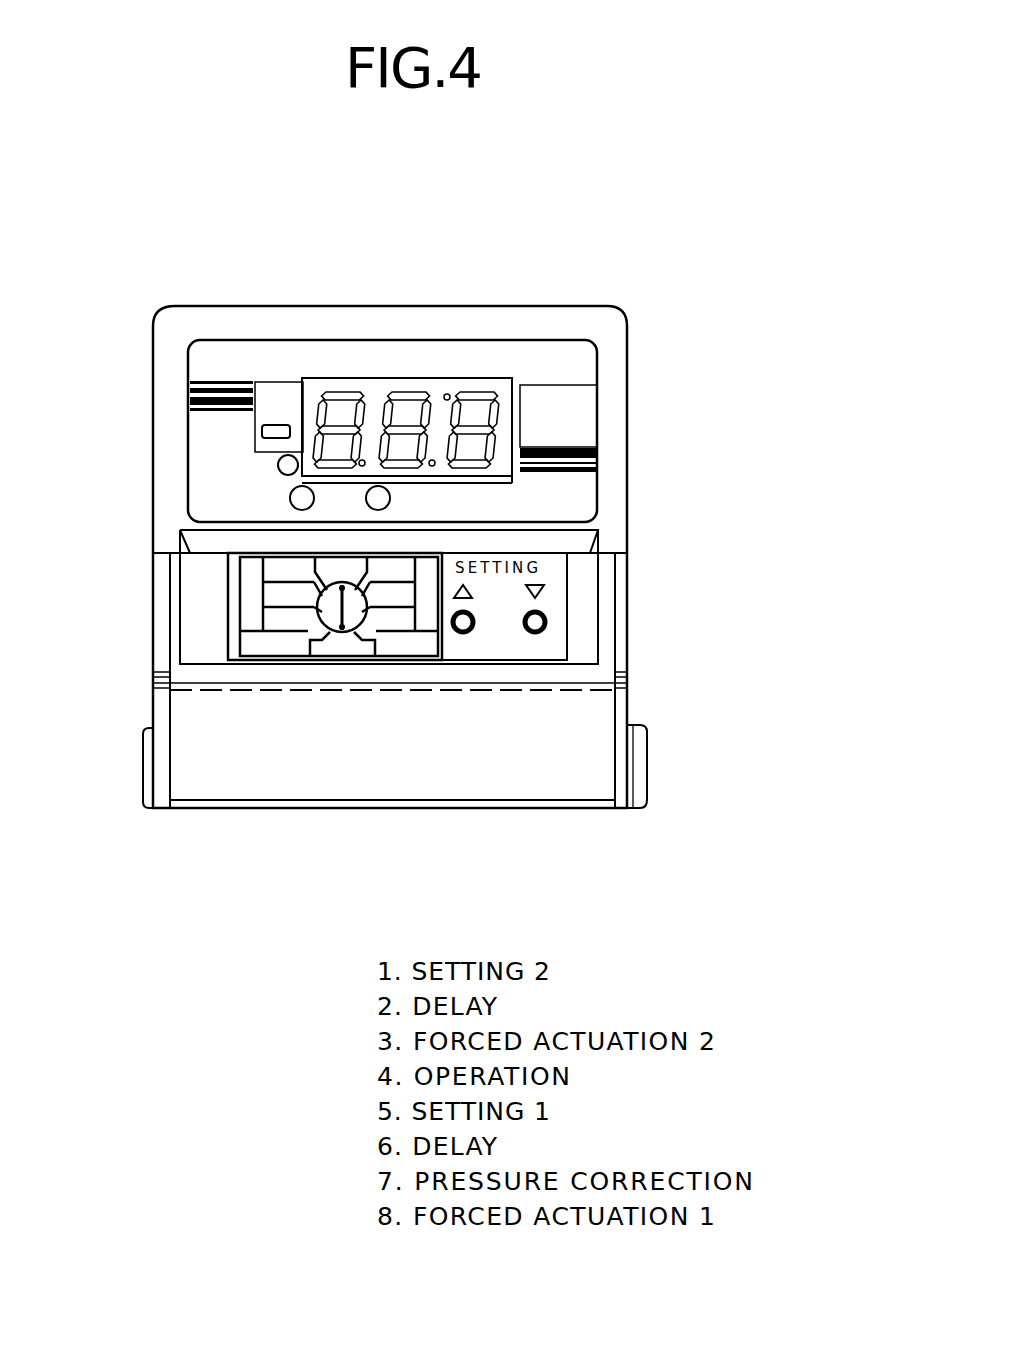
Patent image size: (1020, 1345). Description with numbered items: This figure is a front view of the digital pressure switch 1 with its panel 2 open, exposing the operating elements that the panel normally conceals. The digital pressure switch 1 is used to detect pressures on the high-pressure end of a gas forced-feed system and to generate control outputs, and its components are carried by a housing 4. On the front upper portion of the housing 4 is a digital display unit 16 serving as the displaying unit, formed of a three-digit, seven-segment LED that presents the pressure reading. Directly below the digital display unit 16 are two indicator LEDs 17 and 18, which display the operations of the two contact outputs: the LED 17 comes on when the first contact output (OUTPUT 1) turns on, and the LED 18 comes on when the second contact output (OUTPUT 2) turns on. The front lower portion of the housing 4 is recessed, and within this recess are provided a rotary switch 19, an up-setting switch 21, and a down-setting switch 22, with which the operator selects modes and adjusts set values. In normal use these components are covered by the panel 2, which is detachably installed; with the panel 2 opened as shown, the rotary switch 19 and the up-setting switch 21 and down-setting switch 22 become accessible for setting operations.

The digital pressure switch 1 is at (600, 290).
The panel 2 is at (590, 788).
The housing 4 is at (152, 397).
The digital display unit 16 is at (378, 397).
The LED 17 is at (290, 497).
The LED 18 is at (390, 497).
The rotary switch 19 is at (335, 612).
The up-setting switch 21 is at (463, 635).
The down-setting switch 22 is at (535, 635).